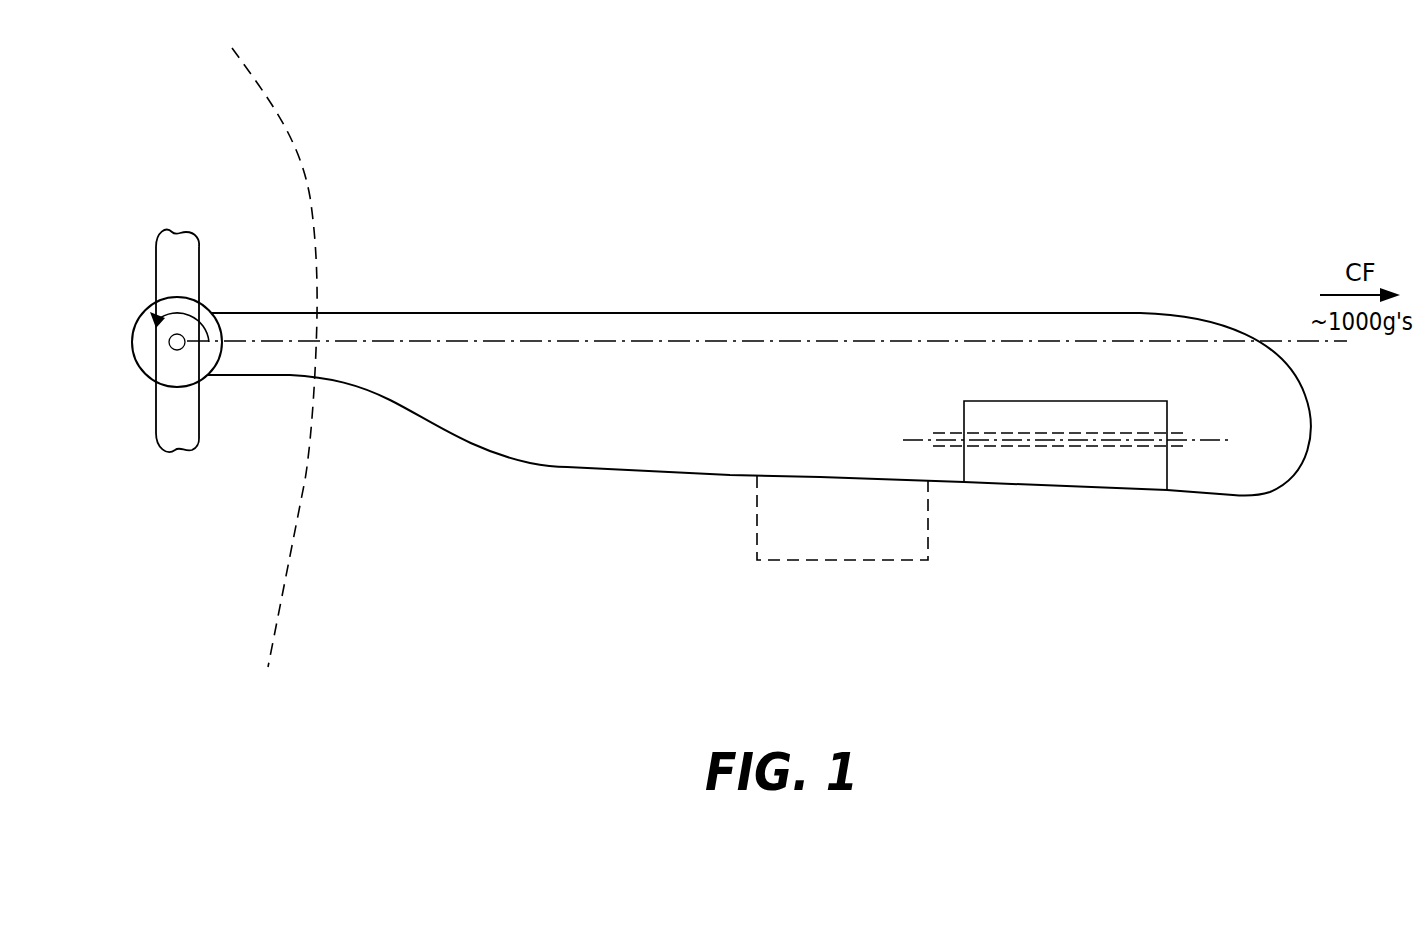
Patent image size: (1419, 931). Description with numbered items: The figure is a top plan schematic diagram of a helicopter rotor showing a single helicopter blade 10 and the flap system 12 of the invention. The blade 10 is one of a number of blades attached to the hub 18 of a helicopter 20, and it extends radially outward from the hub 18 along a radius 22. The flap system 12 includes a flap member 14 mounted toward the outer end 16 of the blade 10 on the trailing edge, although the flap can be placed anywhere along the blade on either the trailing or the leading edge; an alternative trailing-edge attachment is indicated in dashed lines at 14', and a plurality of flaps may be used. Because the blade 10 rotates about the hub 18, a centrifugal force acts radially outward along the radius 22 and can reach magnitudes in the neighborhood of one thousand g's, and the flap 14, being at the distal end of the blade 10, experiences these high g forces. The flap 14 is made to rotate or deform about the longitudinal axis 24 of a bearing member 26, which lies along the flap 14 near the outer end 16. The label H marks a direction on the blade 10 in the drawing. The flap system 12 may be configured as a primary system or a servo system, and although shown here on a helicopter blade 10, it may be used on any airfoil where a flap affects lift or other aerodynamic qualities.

The helicopter blade 10 is at (725, 399).
The flap system 12 is at (1138, 311).
The flap member 14 is at (1092, 477).
The flap (alternative trailing edge position) 14' is at (797, 522).
The outer end 16 is at (1307, 465).
The hub 18 is at (138, 340).
The helicopter 20 is at (293, 121).
The radius 22 is at (705, 338).
The longitudinal axis 24 is at (1217, 440).
The bearing member 26 is at (947, 430).
The blade height direction H is at (508, 422).